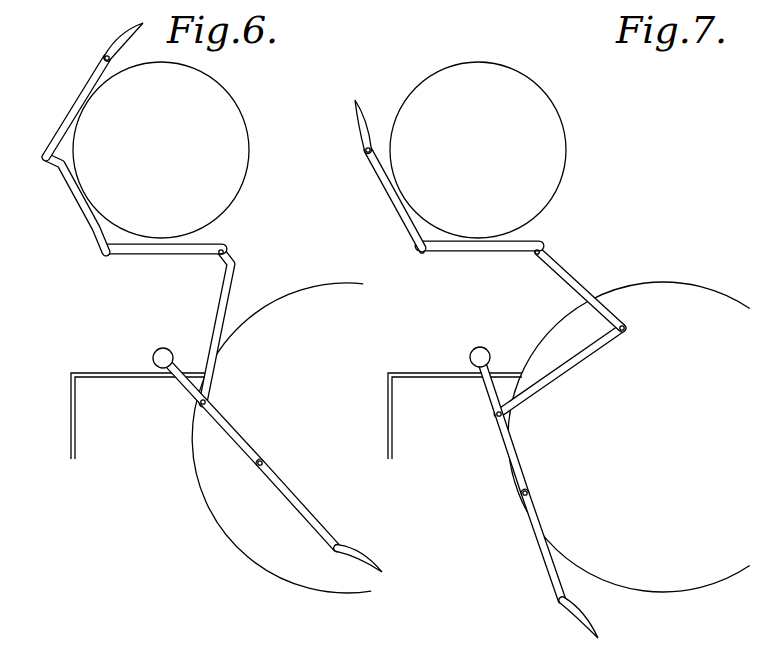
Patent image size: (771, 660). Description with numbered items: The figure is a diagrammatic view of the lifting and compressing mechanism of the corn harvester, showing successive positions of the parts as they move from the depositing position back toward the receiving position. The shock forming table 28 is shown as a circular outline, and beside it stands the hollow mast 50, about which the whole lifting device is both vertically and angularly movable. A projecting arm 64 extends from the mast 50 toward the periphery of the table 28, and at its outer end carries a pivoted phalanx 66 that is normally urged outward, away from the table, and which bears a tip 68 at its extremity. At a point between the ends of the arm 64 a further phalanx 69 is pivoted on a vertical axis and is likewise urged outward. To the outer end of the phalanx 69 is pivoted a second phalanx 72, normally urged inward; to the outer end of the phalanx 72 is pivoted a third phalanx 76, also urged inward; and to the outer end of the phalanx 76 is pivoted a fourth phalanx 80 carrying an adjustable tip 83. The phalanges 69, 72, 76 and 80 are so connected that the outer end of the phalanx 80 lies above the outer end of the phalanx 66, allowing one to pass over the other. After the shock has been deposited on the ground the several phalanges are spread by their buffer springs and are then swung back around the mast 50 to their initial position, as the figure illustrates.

In FIG. 6, the shock forming table 28 is at (325, 315).
In FIG. 7, the shock forming table 28 is at (664, 318).
In FIG. 6, the hollow mast 50 is at (163, 348).
In FIG. 7, the hollow mast 50 is at (481, 347).
In FIG. 6, the projecting arm 64 is at (241, 446).
In FIG. 7, the projecting arm 64 is at (512, 453).
In FIG. 6, the phalanx 66 is at (327, 535).
In FIG. 7, the phalanx 66 is at (550, 572).
In FIG. 6, the tip 68 is at (373, 565).
In FIG. 7, the tip 68 is at (590, 628).
In FIG. 6, the phalanx 69 is at (222, 292).
In FIG. 7, the phalanx 69 is at (577, 367).
In FIG. 6, the second phalanx 72 is at (165, 247).
In FIG. 7, the second phalanx 72 is at (578, 278).
In FIG. 6, the third phalanx 76 is at (97, 222).
In FIG. 7, the third phalanx 76 is at (492, 242).
In FIG. 6, the fourth phalanx 80 is at (92, 92).
In FIG. 7, the fourth phalanx 80 is at (405, 203).
In FIG. 6, the tip 83 is at (129, 42).
In FIG. 7, the tip 83 is at (362, 120).